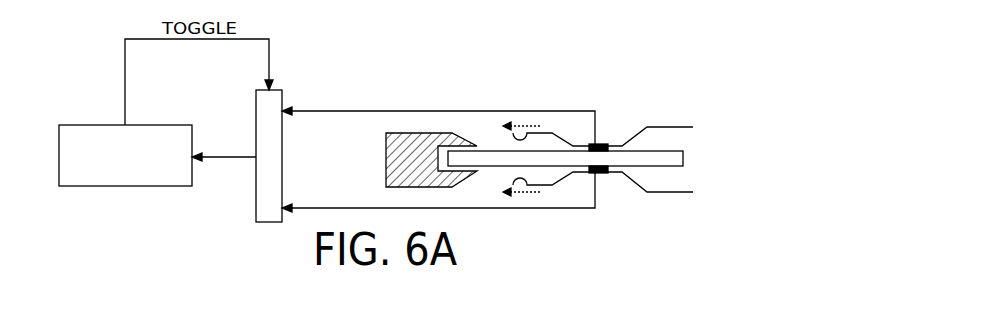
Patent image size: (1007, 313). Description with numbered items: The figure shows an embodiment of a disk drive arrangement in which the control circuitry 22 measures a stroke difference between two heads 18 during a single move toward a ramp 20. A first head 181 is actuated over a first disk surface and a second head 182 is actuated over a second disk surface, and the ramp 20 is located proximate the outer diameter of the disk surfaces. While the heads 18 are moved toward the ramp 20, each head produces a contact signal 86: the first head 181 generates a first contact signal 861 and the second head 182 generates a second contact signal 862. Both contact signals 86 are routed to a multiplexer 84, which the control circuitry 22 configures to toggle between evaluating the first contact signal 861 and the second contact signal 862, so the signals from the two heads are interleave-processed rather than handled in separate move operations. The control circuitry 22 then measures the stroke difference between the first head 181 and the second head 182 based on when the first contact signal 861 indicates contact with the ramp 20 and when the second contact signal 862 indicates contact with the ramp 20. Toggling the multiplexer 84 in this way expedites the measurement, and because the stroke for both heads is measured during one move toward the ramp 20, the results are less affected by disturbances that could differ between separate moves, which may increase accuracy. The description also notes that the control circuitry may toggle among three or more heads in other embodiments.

The control circuitry 22 is at (137, 186).
The multiplexer 84 is at (268, 222).
The ramp 20 is at (386, 160).
The heads 18 is at (641, 161).
The first head 181 is at (616, 119).
The second head 182 is at (625, 198).
The contact signals 86 is at (546, 159).
The first contact signal 861 is at (536, 110).
The second contact signal 862 is at (537, 208).